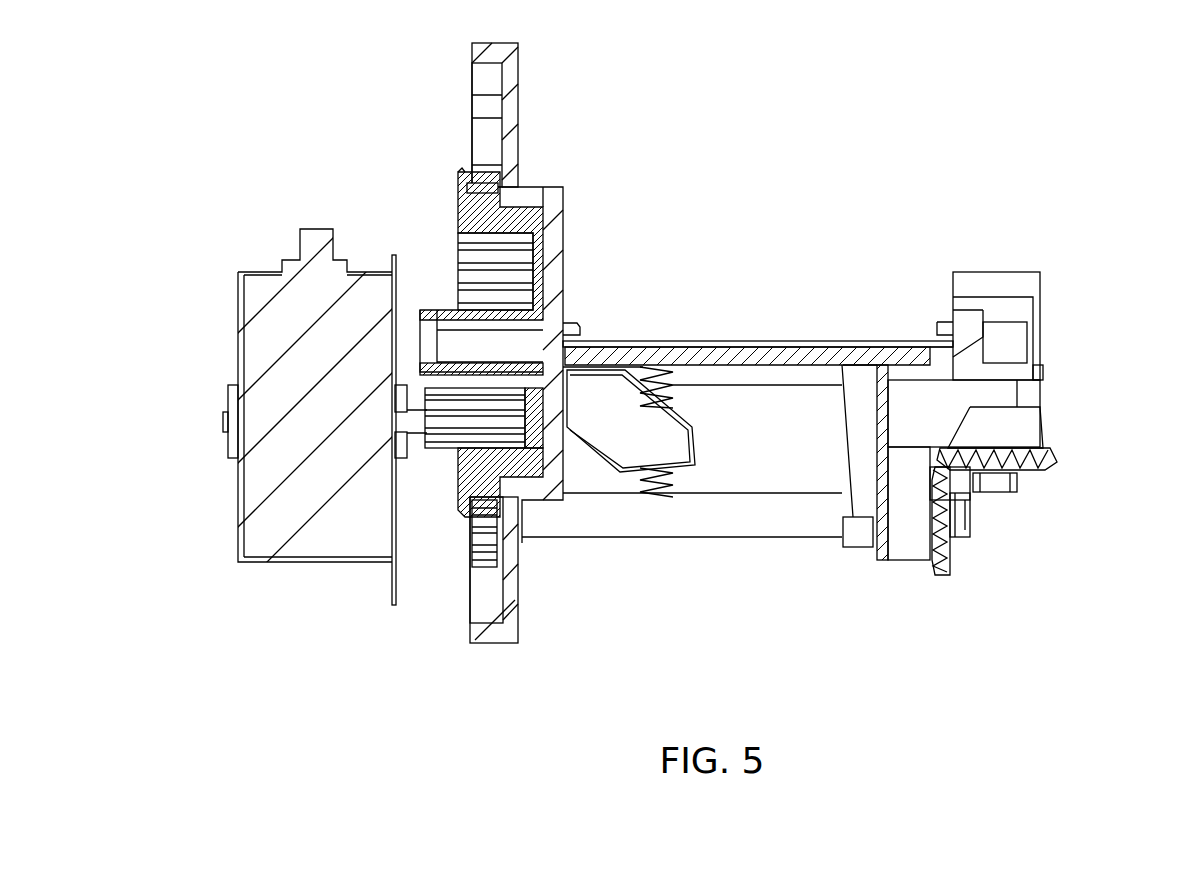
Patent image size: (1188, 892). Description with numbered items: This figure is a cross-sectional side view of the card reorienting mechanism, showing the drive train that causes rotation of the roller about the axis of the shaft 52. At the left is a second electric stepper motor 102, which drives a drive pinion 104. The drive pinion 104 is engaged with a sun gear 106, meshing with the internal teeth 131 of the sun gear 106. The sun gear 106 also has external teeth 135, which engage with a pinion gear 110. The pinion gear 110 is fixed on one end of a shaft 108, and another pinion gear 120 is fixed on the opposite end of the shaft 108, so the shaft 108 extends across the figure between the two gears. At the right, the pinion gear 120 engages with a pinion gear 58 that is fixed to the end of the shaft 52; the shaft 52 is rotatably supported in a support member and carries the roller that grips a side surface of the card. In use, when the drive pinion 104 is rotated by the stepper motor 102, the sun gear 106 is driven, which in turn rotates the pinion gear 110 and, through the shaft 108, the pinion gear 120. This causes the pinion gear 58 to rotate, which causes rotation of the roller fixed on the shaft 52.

The shaft 52 is at (1025, 388).
The pinion gear 58 is at (1043, 454).
The second electric stepper motor 102 is at (247, 352).
The drive pinion 104 is at (455, 405).
The sun gear 106 is at (462, 215).
The shaft 108 is at (703, 520).
The pinion gear 110 is at (472, 540).
The pinion gear 120 is at (963, 547).
The internal teeth 131 is at (468, 262).
The external teeth 135 is at (483, 185).